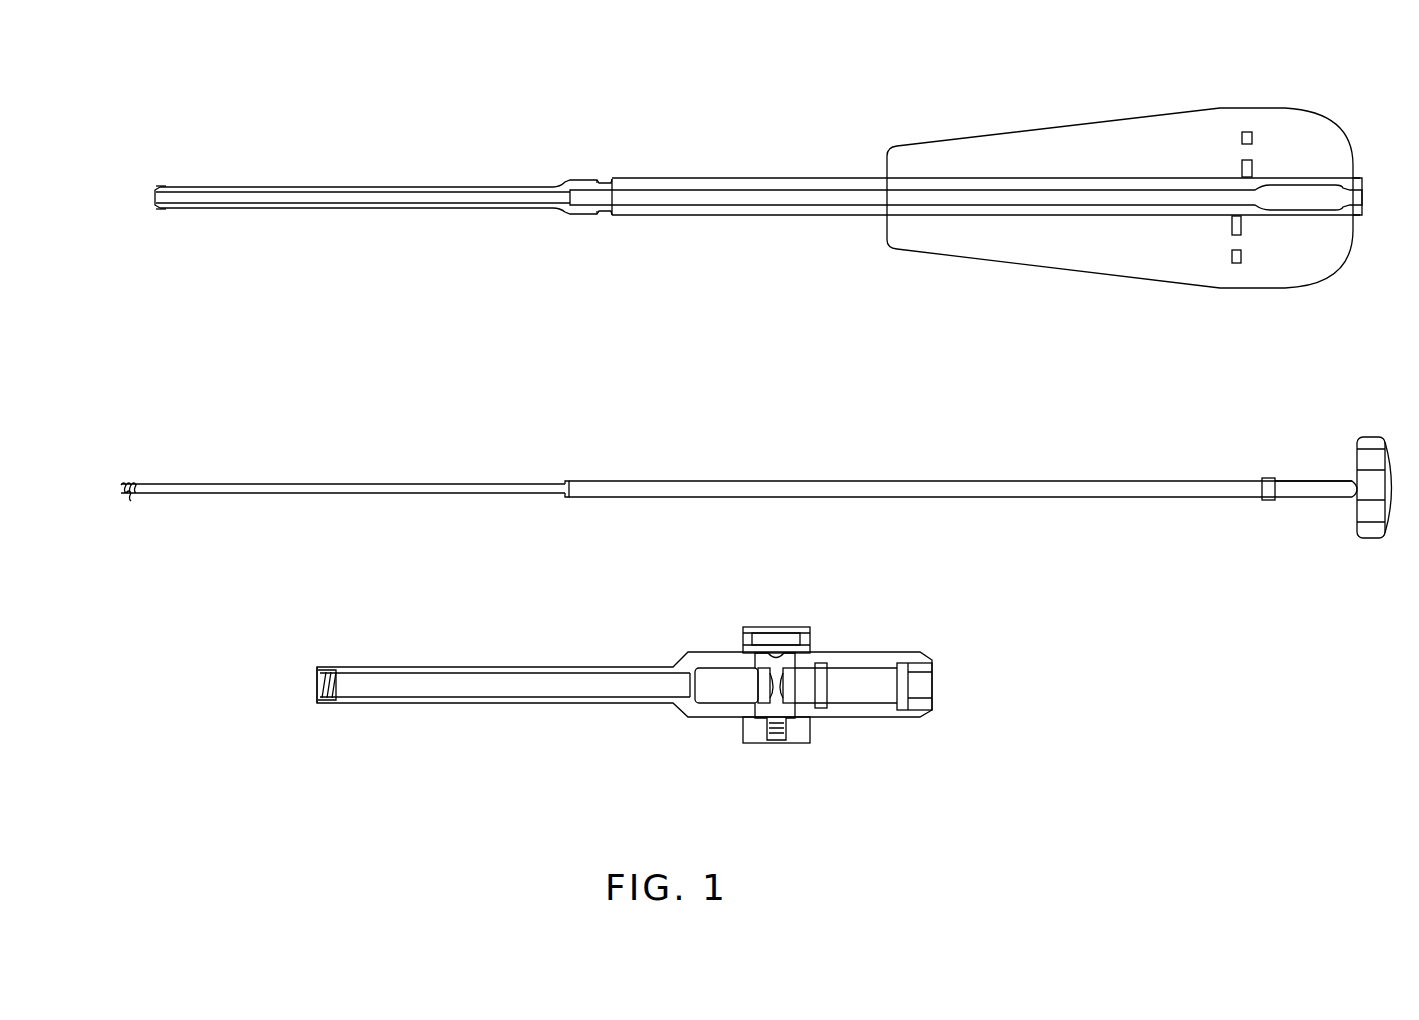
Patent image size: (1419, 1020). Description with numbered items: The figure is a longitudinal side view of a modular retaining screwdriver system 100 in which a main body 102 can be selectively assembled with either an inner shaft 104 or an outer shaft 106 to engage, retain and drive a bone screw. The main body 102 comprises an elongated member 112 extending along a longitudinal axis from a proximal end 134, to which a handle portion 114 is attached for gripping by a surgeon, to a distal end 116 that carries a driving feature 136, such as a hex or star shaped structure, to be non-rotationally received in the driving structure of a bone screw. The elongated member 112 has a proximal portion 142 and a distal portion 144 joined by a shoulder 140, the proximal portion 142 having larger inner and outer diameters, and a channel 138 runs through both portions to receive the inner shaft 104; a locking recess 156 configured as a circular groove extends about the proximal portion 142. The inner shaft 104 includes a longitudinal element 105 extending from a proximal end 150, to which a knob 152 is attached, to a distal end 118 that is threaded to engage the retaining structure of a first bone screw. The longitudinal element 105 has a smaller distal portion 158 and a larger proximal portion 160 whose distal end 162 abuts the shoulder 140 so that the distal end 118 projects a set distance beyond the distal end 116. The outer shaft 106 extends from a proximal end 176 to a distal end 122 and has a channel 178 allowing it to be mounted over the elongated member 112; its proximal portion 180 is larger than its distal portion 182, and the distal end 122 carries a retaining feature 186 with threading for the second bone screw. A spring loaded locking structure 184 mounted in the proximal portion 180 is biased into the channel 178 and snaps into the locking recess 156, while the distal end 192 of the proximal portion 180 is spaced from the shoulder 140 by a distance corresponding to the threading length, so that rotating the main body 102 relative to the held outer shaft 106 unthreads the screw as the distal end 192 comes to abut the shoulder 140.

The modular retaining screwdriver system 100 is at (122, 175).
The main body 102 is at (543, 122).
The inner shaft 104 is at (662, 400).
The longitudinal element 105 is at (766, 481).
The outer shaft 106 is at (596, 626).
The elongated member 112 is at (683, 177).
The handle portion 114 is at (1020, 130).
The distal end 116 is at (158, 184).
The distal end 118 is at (128, 482).
The distal end 122 is at (325, 667).
The proximal end 134 is at (1240, 192).
The driving feature 136 is at (153, 212).
The channel 138 is at (731, 192).
The shoulder 140 is at (545, 217).
The proximal portion 142 is at (783, 179).
The distal portion 144 is at (305, 185).
The proximal end 150 is at (1346, 484).
The knob 152 is at (1373, 439).
The locking recess 156 is at (606, 176).
The distal portion 158 is at (350, 482).
The proximal portion 160 is at (990, 482).
The distal end 162 is at (569, 480).
The proximal end 176 is at (930, 716).
The channel 178 is at (548, 686).
The proximal portion 180 is at (863, 665).
The distal portion 182 is at (437, 667).
The locking structure 184 is at (776, 700).
The retaining feature 186 is at (315, 702).
The distal end 192 is at (700, 717).